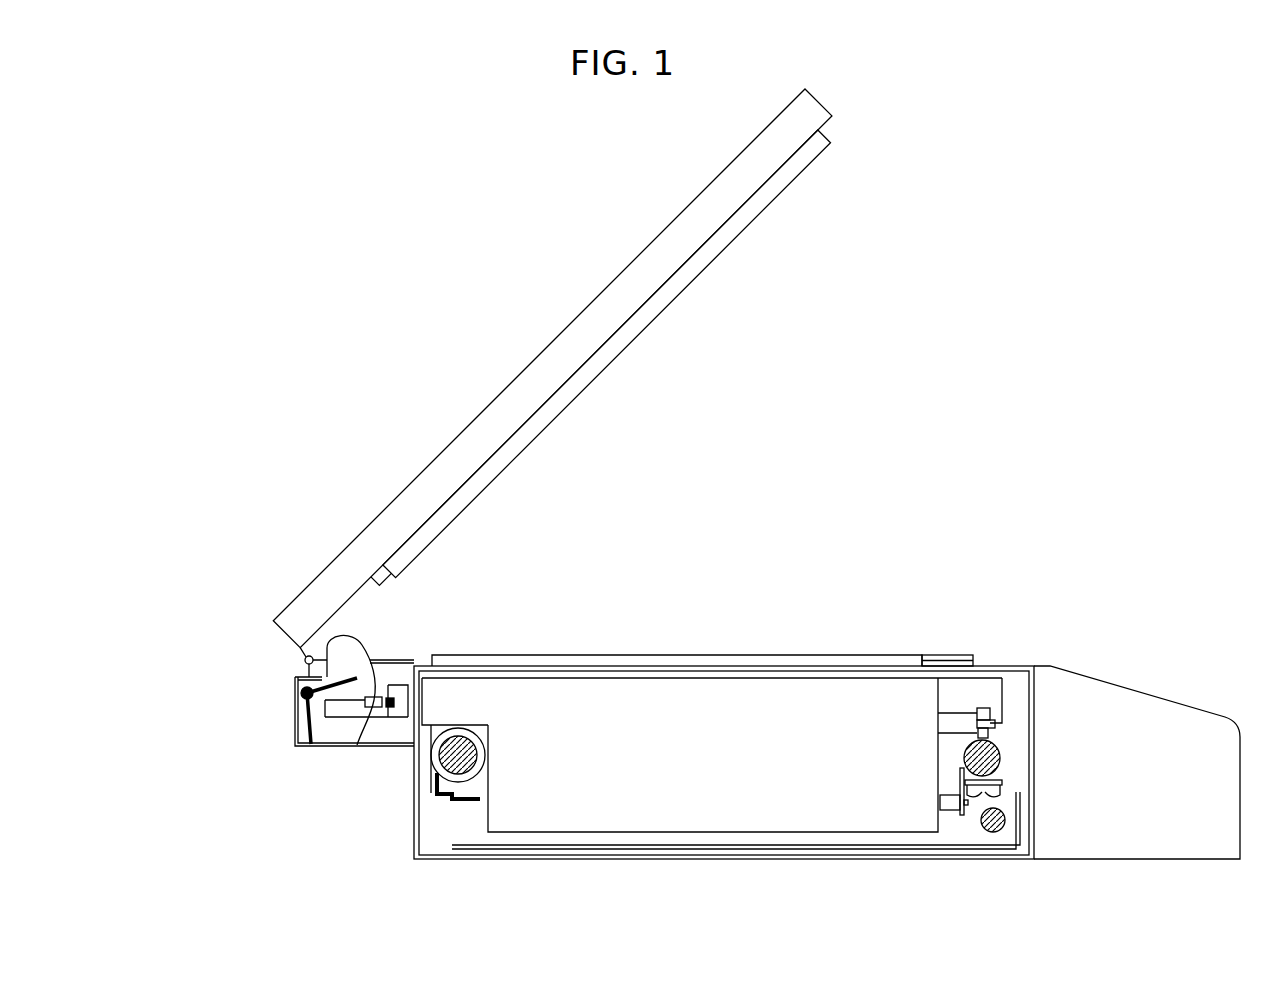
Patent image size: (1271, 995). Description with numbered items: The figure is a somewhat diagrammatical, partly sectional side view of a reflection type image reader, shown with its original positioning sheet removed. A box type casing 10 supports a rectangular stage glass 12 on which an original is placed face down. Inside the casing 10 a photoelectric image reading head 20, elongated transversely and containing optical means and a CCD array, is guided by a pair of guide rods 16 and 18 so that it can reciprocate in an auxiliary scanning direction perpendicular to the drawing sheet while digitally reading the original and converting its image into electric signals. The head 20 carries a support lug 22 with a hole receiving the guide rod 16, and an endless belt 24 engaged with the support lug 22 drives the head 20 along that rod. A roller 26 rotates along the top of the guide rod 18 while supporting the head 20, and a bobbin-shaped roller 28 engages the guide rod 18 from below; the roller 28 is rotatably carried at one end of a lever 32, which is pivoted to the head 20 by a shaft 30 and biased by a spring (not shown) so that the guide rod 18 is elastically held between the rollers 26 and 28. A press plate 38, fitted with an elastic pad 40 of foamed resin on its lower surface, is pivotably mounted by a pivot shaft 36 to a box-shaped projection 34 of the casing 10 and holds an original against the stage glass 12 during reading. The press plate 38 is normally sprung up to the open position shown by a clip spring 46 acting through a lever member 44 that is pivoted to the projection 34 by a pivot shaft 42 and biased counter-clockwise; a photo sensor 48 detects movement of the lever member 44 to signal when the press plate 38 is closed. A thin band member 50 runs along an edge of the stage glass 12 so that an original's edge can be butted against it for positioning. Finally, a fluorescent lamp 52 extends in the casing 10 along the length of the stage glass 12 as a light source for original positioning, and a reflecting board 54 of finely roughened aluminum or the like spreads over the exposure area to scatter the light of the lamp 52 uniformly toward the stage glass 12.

The casing 10 is at (611, 862).
The stage glass 12 is at (922, 655).
The guide rod 16 is at (436, 771).
The guide rod 18 is at (1000, 754).
The photoelectric image reading head 20 is at (773, 822).
The support lug 22 is at (431, 757).
The endless belt 24 is at (465, 802).
The roller 26 is at (990, 713).
The bobbin-shaped roller 28 is at (1002, 793).
The shaft 30 is at (948, 803).
The lever 32 is at (958, 778).
The box-shaped projection 34 is at (317, 750).
The pivot shaft 36 is at (304, 659).
The press plate 38 is at (493, 420).
The elastic pad 40 is at (797, 172).
The pivot shaft 42 is at (293, 691).
The lever member 44 is at (367, 638).
The clip spring 46 is at (296, 722).
The photo sensor 48 is at (372, 718).
The band member 50 is at (637, 655).
The fluorescent lamp 52 is at (1004, 828).
The reflecting board 54 is at (918, 849).